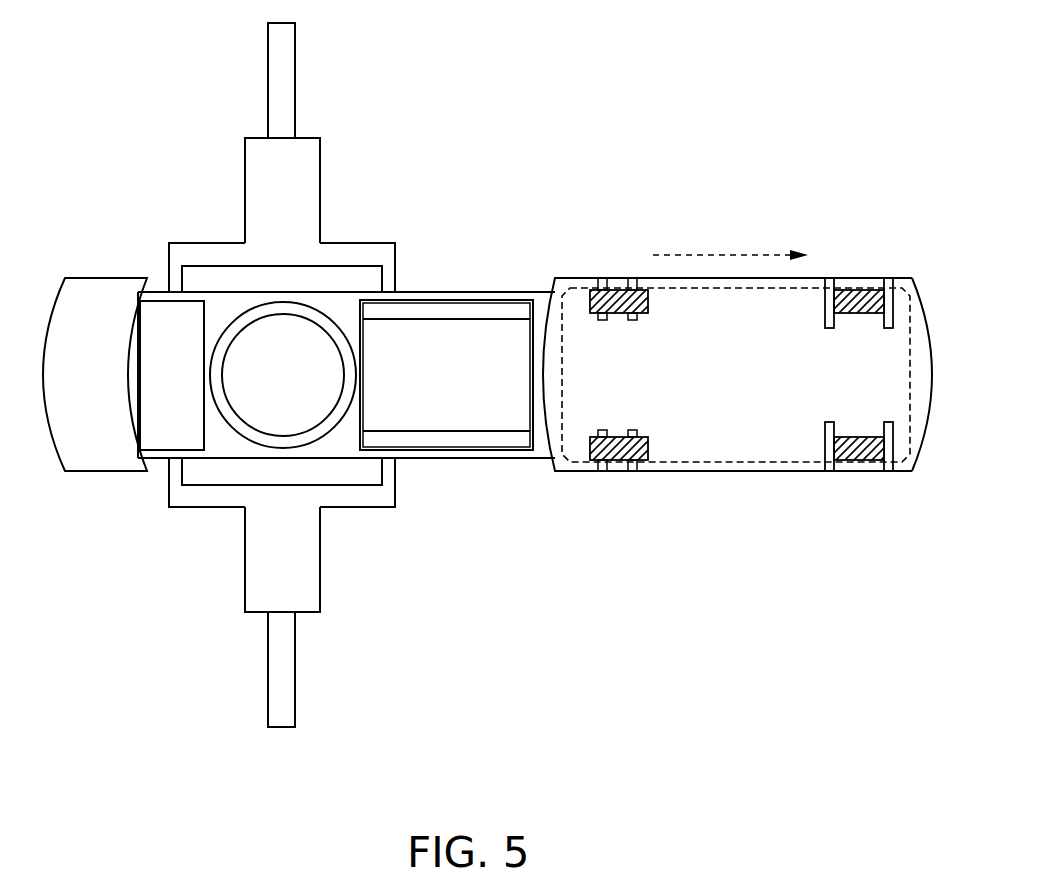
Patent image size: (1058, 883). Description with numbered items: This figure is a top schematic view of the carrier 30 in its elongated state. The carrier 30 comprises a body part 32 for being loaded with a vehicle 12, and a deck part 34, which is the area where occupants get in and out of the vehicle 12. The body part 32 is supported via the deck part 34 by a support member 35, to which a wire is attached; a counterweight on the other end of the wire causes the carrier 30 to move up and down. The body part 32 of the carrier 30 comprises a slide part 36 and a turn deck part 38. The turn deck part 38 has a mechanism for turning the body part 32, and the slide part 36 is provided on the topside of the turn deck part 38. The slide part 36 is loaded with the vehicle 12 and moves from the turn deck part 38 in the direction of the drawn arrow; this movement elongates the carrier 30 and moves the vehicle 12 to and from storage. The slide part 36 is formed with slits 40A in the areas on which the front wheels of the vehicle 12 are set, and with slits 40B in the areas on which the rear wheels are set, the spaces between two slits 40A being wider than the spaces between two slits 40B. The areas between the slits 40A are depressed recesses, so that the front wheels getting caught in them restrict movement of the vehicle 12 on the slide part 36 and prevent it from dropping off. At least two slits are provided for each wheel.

The vehicle 12 is at (890, 362).
The carrier 30 is at (590, 147).
The body part 32 is at (103, 290).
The deck part 34 is at (307, 168).
The support member 35 is at (280, 92).
The slide part 36 is at (920, 403).
The turn deck part 38 is at (341, 312).
The slits 40A is at (832, 278).
The slits 40B is at (605, 278).